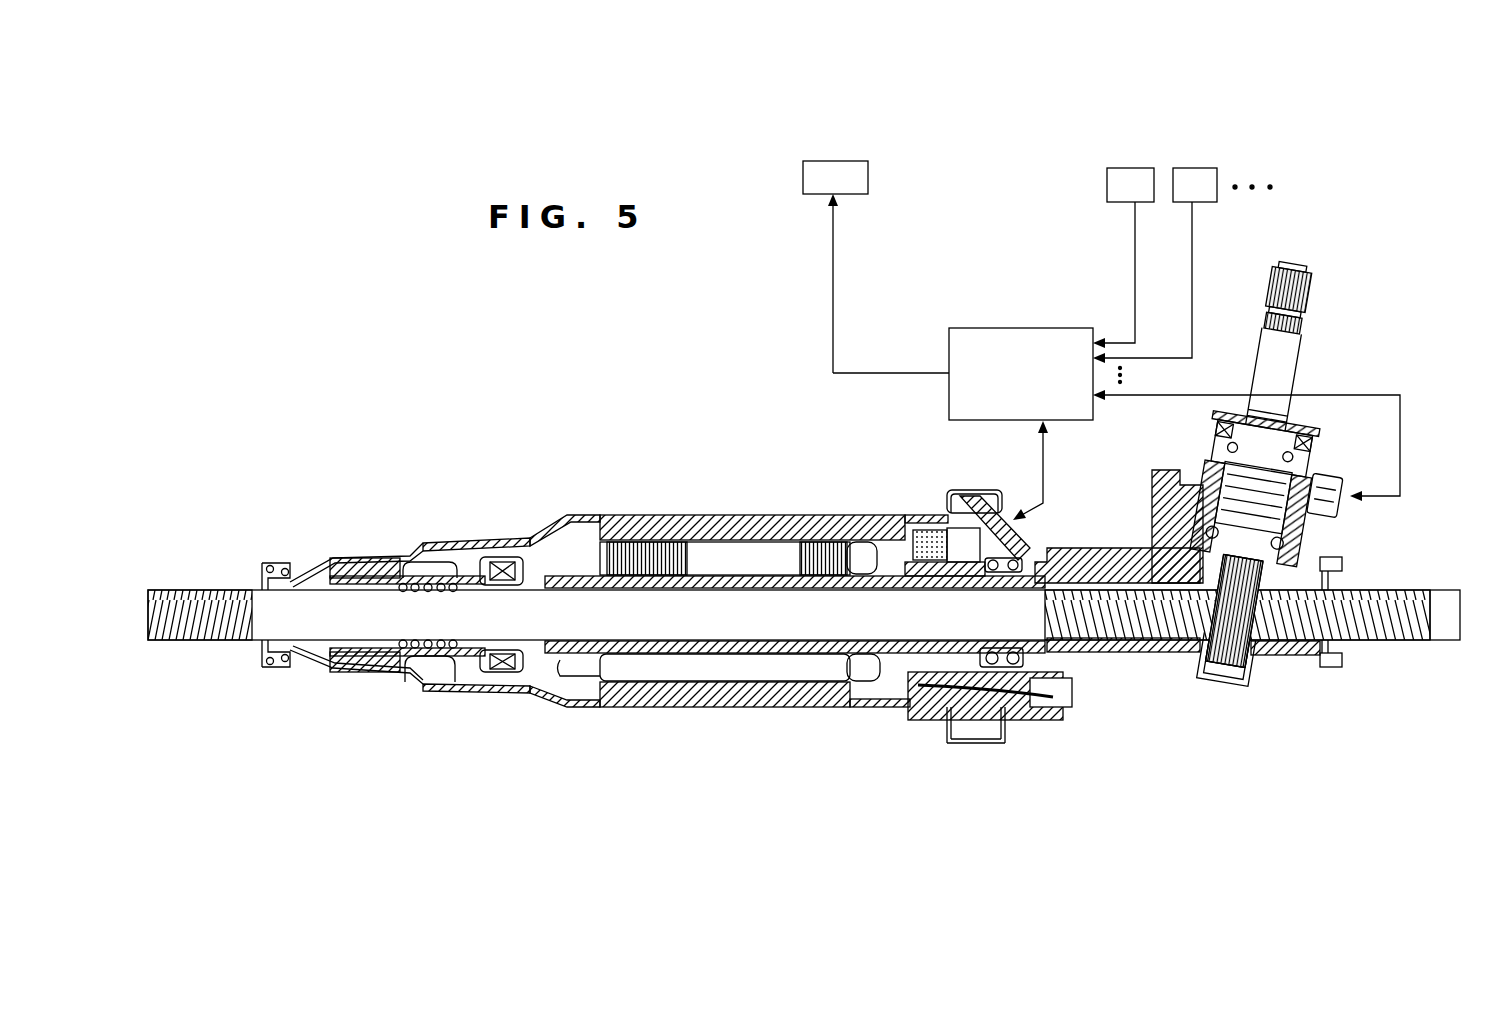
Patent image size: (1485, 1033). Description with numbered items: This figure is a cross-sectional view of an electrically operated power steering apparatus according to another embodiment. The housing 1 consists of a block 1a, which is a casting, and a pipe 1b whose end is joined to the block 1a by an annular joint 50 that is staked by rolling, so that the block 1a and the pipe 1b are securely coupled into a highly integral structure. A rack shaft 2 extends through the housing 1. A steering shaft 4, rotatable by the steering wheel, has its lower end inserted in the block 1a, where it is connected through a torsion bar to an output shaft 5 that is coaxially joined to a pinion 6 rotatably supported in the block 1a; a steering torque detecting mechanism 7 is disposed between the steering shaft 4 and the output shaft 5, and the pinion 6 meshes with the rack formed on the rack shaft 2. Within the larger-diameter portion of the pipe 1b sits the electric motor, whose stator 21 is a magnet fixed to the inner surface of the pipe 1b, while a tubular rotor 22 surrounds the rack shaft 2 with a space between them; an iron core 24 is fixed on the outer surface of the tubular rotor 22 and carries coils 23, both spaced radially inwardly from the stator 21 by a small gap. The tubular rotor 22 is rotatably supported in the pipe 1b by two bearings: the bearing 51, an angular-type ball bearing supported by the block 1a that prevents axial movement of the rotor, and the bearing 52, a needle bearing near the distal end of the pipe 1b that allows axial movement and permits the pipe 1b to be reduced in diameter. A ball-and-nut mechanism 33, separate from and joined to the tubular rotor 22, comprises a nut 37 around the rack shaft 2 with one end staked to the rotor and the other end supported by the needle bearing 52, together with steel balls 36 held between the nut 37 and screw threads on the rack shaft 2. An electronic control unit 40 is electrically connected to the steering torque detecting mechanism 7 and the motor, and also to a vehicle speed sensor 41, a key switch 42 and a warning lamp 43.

The housing 1 is at (1155, 655).
The block 1a is at (1130, 652).
The pipe 1b is at (697, 707).
The rack shaft 2 is at (793, 622).
The steering shaft 4 is at (1290, 348).
The output shaft 5 is at (1305, 536).
The pinion 6 is at (1263, 656).
The steering torque detecting mechanism 7 is at (1306, 444).
The stator 21 is at (697, 532).
The tubular rotor 22 is at (550, 576).
The coils 23 is at (847, 553).
The iron core 24 is at (618, 540).
The ball-and-nut mechanism 33 is at (423, 578).
The steel balls 36 is at (407, 656).
The nut 37 is at (450, 656).
The electronic control unit 40 is at (1007, 332).
The vehicle speed sensor 41 is at (1194, 178).
The key switch 42 is at (1128, 178).
The warning lamp 43 is at (832, 170).
The annular joint 50 is at (960, 488).
The bearing 51 is at (1030, 544).
The bearing 52 is at (350, 576).